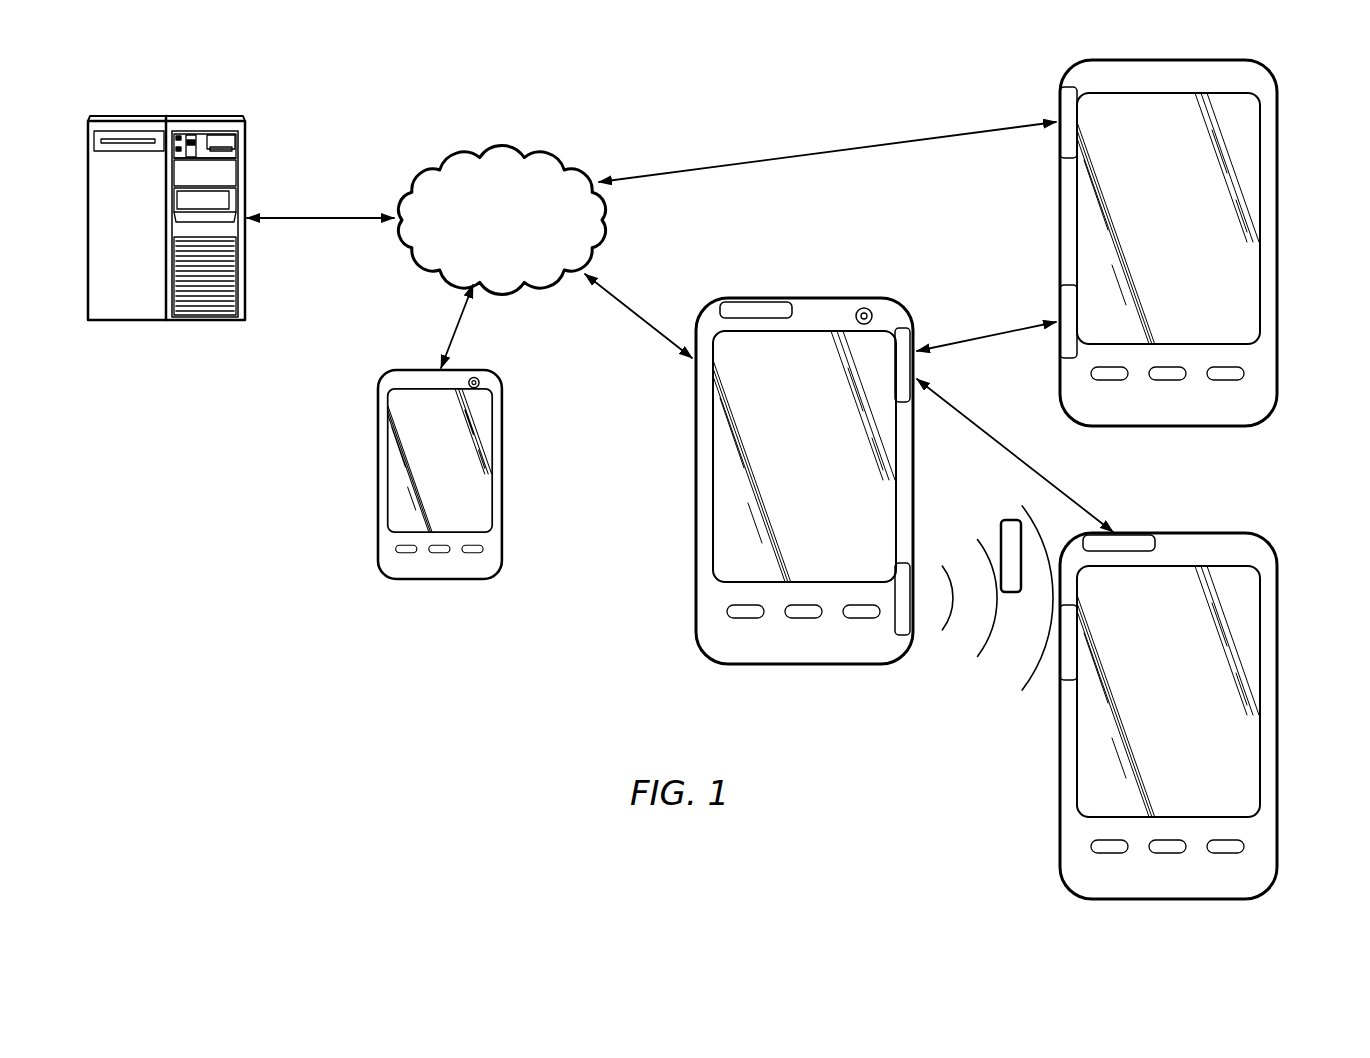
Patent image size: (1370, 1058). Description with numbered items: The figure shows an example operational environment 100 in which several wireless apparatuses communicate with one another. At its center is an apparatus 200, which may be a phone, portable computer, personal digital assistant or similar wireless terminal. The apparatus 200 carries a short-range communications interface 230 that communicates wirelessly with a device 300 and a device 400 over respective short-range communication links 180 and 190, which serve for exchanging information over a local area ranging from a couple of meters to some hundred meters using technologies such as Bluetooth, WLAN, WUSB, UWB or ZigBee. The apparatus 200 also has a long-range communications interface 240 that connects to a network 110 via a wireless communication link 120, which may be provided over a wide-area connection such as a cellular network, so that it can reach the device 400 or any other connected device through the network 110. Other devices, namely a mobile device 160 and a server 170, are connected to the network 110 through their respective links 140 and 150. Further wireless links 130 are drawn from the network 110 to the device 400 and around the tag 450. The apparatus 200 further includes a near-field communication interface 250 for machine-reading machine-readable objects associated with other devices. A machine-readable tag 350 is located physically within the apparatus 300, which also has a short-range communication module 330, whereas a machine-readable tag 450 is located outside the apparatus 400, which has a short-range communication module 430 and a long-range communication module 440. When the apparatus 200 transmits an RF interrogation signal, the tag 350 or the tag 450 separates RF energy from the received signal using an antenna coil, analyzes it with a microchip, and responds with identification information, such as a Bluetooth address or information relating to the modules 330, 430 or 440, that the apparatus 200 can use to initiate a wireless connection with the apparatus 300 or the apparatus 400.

The operational environment 100 is at (580, 703).
The network 110 is at (521, 232).
The wireless communication link 120 is at (636, 315).
The communication link 130 is at (790, 155).
The link 140 is at (457, 325).
The link 150 is at (320, 217).
The mobile device 160 is at (375, 492).
The server 170 is at (191, 110).
The short-range communication link 180 is at (1005, 447).
The short-range communication link 190 is at (995, 336).
The apparatus 200 is at (781, 481).
The short-range communications interface 230 is at (910, 340).
The long-range communications interface 240 is at (755, 306).
The near-field communication interface 250 is at (893, 636).
The apparatus 300 is at (1206, 692).
The short-range communication module 330 is at (1138, 538).
The machine-readable tag 350 is at (1078, 652).
The apparatus 400 is at (1174, 243).
The short-range communication module 430 is at (1060, 305).
The long-range communication module 440 is at (1060, 105).
The machine-readable tag 450 is at (1001, 533).